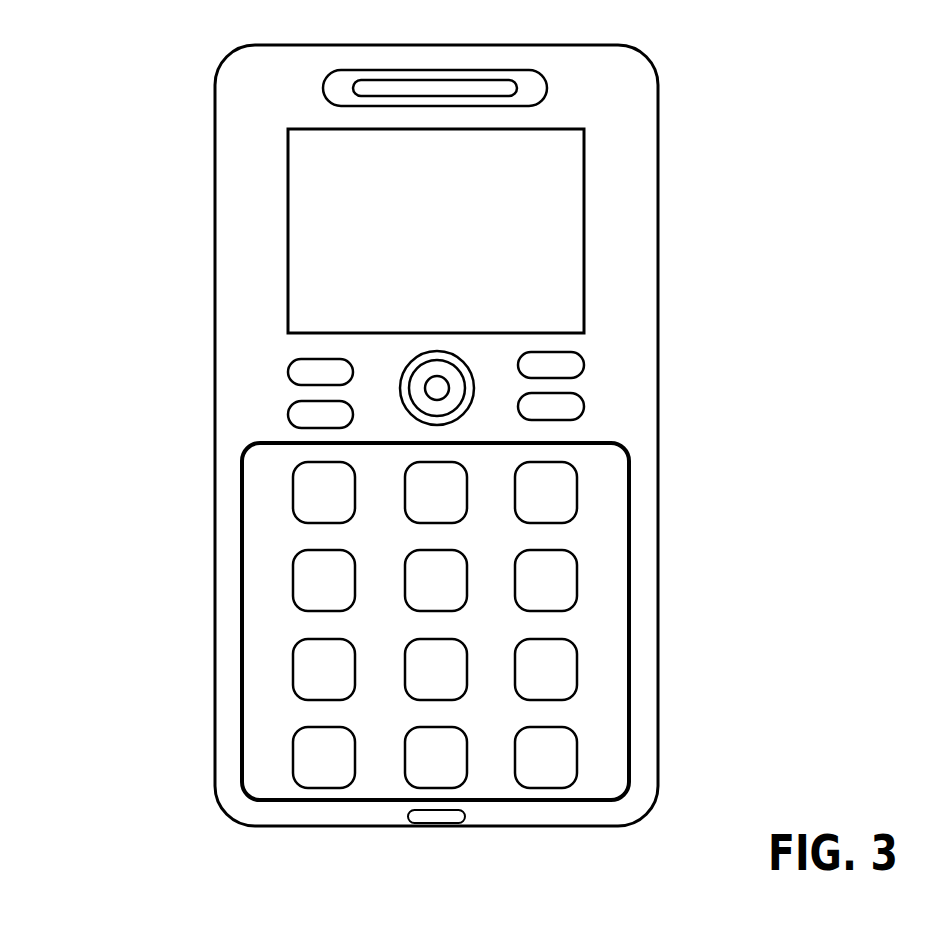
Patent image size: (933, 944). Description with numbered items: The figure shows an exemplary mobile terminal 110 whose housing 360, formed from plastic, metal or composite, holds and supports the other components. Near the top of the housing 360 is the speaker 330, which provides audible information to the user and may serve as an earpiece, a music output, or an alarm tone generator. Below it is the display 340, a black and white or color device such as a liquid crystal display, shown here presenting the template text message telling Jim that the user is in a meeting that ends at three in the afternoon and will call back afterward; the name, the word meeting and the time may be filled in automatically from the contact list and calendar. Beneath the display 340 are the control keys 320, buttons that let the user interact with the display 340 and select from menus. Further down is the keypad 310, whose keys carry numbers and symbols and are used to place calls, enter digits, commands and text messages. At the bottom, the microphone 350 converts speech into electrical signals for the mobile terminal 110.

The mobile terminal 110 is at (409, 443).
The keypad 310 is at (381, 621).
The control keys 320 is at (678, 340).
The speaker 330 is at (435, 55).
The display 340 is at (465, 231).
The microphone 350 is at (419, 846).
The housing 360 is at (475, 435).